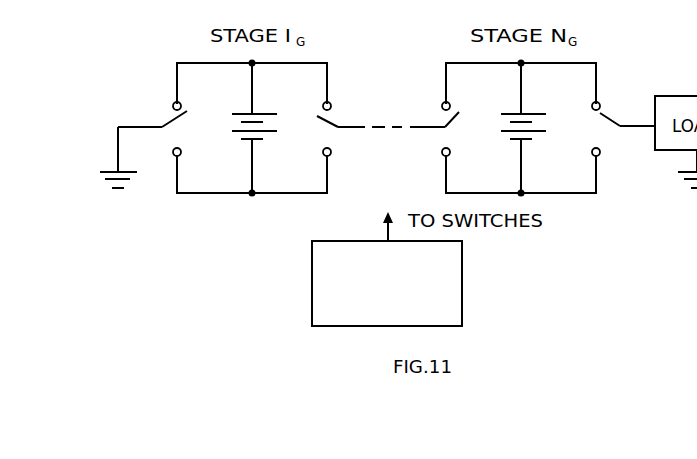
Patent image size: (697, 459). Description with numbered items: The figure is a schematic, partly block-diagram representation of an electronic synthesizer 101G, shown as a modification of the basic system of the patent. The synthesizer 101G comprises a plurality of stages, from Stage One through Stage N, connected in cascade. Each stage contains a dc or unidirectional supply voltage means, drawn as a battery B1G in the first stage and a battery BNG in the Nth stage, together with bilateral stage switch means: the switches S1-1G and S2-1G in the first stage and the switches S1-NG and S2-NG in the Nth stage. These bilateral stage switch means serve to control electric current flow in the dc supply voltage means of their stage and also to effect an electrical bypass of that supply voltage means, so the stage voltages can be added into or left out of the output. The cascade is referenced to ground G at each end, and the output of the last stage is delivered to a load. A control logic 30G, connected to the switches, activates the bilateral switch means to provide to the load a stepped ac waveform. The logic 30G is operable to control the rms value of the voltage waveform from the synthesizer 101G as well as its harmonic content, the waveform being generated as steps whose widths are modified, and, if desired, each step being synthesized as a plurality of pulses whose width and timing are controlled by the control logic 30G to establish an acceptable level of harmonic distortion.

The electronic synthesizer 101G is at (255, 250).
The control logic 30G is at (462, 303).
The dc or unidirectional supply voltage means B1G is at (267, 114).
The dc or unidirectional supply voltage means BNG is at (538, 115).
The bilateral stage switch means S1-1G is at (182, 132).
The bilateral stage switch means S2-1G is at (339, 122).
The bilateral stage switch means S1-NG is at (450, 124).
The bilateral stage switch means S2-NG is at (599, 117).
The ground G is at (118, 188).